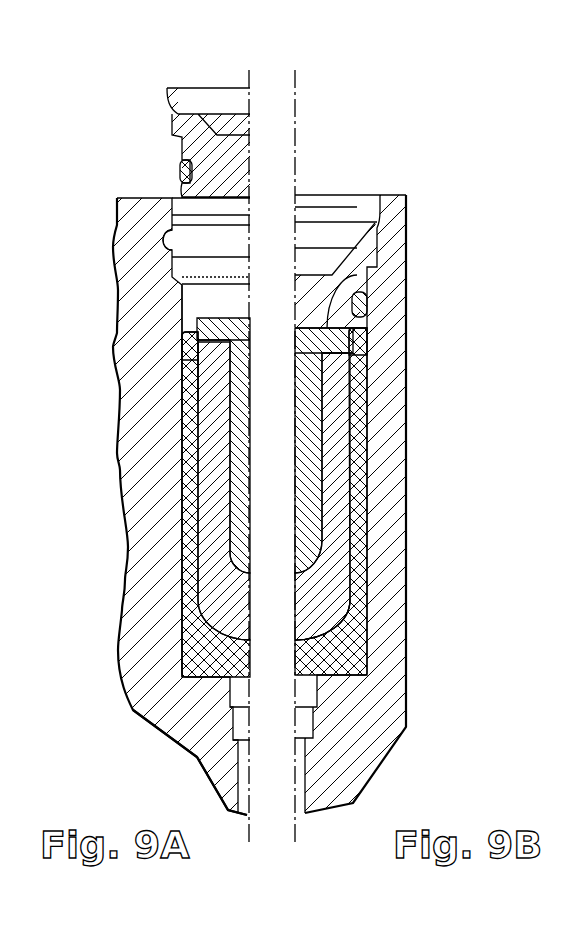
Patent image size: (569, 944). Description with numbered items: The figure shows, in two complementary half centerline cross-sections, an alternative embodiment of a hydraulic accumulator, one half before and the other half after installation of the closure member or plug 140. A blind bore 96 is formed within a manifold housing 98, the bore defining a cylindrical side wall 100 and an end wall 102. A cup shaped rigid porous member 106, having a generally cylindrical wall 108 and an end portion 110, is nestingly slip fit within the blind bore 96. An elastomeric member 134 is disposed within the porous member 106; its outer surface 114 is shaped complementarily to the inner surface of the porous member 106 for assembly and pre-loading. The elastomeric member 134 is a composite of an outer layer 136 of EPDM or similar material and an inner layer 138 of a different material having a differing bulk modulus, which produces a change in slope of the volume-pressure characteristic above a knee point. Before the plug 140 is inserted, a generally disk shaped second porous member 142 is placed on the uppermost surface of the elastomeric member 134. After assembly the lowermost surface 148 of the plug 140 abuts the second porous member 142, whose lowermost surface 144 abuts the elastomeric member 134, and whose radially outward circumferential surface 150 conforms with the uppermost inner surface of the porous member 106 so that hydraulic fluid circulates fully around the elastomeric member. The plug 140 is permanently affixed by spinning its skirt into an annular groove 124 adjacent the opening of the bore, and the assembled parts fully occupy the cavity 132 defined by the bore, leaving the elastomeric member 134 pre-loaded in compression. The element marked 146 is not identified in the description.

In FIG. 9B, the blind bore 96 is at (366, 206).
In FIG. 9B, the manifold housing 98 is at (393, 490).
In FIG. 9A, the cylindrical side wall 100 is at (186, 309).
In FIG. 9A, the end wall 102 is at (180, 655).
In FIG. 9A, the rigid porous member 106 is at (188, 538).
In FIG. 9A, the cylindrical wall 108 is at (184, 471).
In FIG. 9B, the end portion 110 is at (335, 660).
In FIG. 9A, the outer surface of elastomeric member 114 is at (186, 367).
In FIG. 9A, the annular groove 124 is at (172, 236).
In FIG. 9A, the cavity 132 is at (242, 309).
In FIG. 9B, the elastomeric member 134 is at (340, 431).
In FIG. 9B, the outer layer 136 is at (318, 538).
In FIG. 9B, the inner layer 138 is at (318, 585).
In FIG. 9A, the closure member or plug 140 is at (205, 100).
In FIG. 9B, the second porous member 142 is at (378, 268).
In FIG. 9A, the lowermost surface of second porous member 144 is at (182, 347).
In FIG. 9A, the bore wall 146 is at (182, 313).
In FIG. 9A, the lowermost surface of plug 148 is at (236, 200).
In FIG. 9B, the circumferential surface of second porous member 150 is at (357, 350).